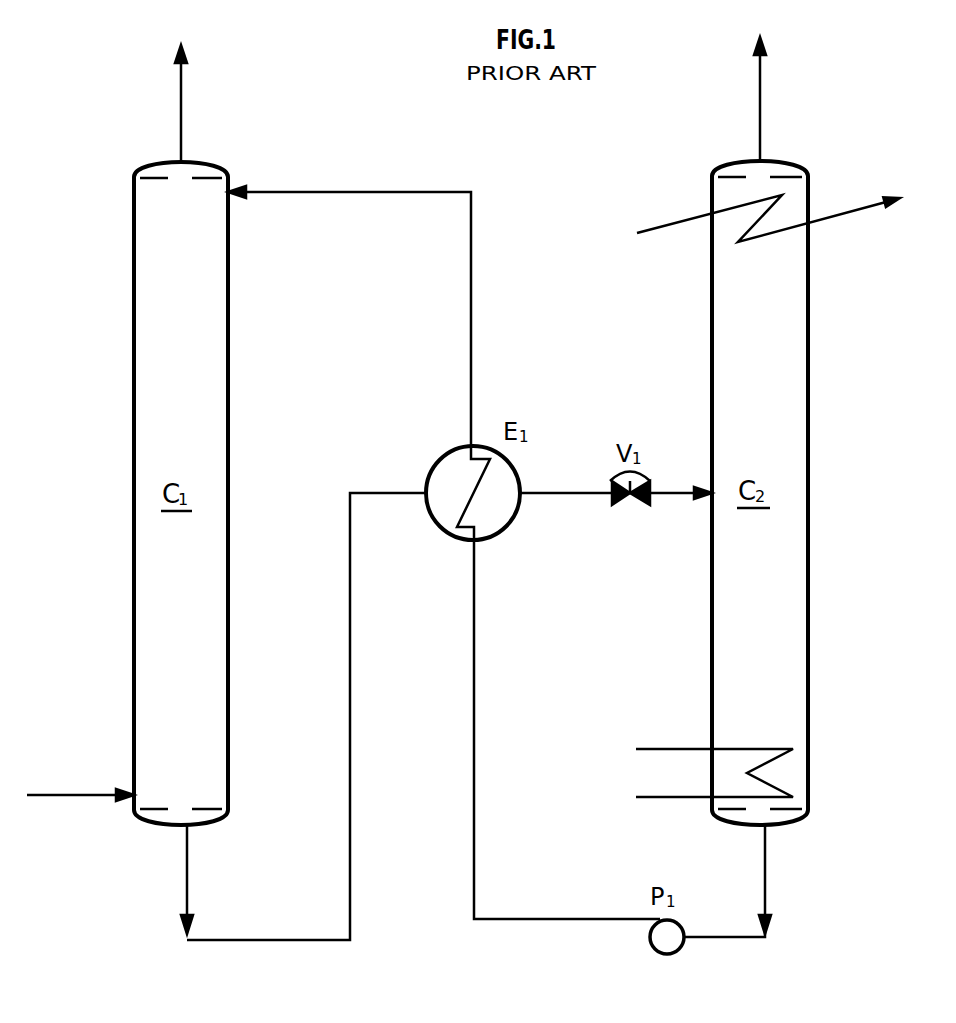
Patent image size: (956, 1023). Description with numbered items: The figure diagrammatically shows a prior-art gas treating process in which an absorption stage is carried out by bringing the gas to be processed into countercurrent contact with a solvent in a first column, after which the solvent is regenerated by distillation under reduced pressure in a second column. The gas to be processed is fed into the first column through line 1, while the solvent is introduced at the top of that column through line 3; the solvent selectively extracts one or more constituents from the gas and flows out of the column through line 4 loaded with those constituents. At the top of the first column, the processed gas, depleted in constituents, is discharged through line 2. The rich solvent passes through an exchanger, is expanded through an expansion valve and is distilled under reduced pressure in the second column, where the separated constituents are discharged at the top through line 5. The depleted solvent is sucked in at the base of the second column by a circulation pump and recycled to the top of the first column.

The line 1 is at (70, 792).
The line 2 is at (181, 125).
The line 3 is at (305, 192).
The line 4 is at (265, 940).
The line 5 is at (760, 100).